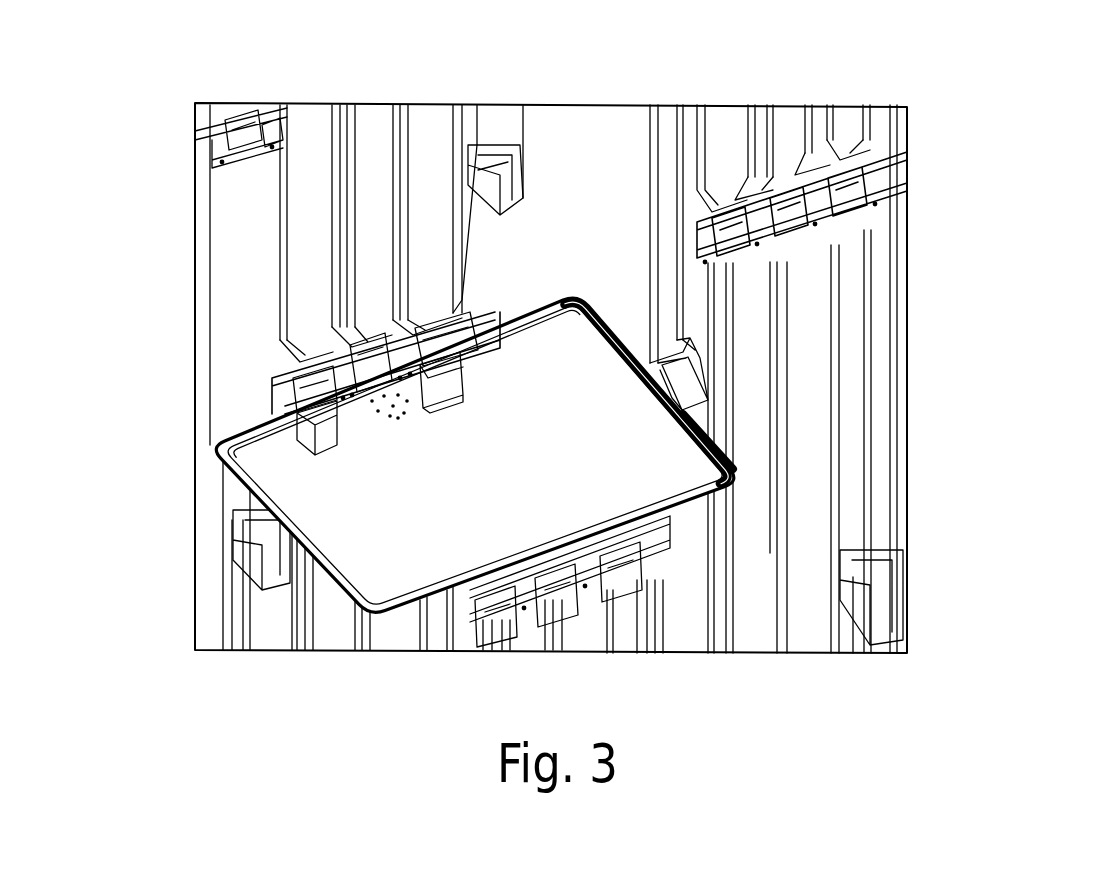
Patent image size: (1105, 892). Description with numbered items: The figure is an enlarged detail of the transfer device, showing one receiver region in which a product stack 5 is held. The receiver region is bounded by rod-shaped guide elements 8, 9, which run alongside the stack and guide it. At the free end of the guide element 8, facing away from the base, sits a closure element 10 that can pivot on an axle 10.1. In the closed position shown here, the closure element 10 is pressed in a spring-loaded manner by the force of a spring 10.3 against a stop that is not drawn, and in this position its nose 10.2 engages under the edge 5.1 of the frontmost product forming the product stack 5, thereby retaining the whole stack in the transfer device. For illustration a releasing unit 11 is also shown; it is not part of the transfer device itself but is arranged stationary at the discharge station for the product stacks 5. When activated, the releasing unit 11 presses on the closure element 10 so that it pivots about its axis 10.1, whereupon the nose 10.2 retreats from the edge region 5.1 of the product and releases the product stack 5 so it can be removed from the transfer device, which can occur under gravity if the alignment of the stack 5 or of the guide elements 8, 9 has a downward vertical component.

The guide element 8 is at (308, 163).
The guide element 9 is at (697, 318).
The product stack 5 is at (597, 458).
The edge 5.1 is at (708, 447).
The nose 10.2 is at (693, 488).
The closure element 10 is at (395, 367).
The axle 10.1 is at (443, 332).
The spring 10.3 is at (397, 420).
The releasing unit 11 is at (300, 433).